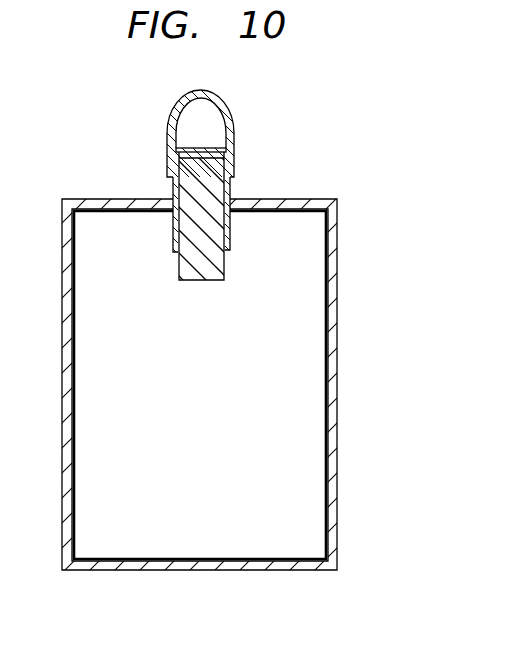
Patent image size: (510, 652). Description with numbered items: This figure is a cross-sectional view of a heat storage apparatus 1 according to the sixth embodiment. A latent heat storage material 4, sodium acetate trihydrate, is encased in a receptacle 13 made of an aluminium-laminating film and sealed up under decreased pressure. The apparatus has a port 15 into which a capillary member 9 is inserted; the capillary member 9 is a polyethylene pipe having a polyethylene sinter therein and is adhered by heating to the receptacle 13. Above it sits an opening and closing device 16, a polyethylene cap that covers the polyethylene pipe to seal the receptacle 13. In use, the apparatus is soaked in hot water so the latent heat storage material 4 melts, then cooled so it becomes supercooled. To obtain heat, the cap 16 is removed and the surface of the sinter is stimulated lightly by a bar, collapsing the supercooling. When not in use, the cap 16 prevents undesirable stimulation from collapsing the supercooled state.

The heat storage apparatus 1 is at (340, 302).
The latent heat storage material 4 is at (82, 397).
The capillary member 9 is at (176, 186).
The receptacle 13 is at (338, 417).
The port 15 is at (174, 192).
The opening and closing device 16 is at (180, 113).